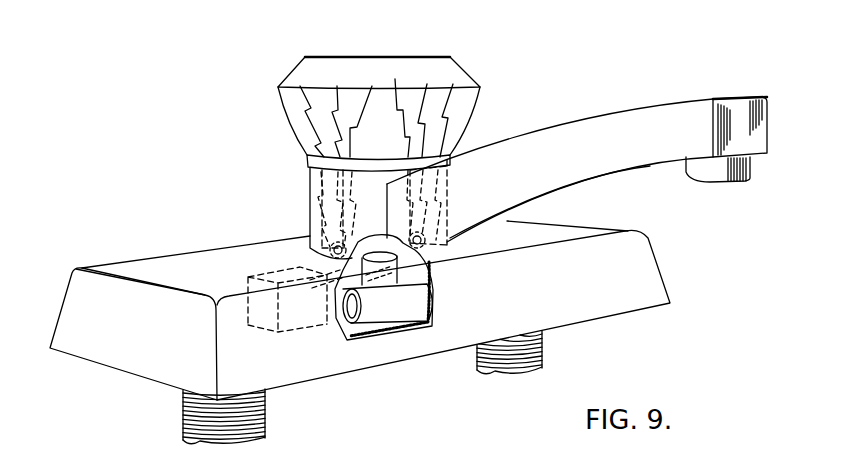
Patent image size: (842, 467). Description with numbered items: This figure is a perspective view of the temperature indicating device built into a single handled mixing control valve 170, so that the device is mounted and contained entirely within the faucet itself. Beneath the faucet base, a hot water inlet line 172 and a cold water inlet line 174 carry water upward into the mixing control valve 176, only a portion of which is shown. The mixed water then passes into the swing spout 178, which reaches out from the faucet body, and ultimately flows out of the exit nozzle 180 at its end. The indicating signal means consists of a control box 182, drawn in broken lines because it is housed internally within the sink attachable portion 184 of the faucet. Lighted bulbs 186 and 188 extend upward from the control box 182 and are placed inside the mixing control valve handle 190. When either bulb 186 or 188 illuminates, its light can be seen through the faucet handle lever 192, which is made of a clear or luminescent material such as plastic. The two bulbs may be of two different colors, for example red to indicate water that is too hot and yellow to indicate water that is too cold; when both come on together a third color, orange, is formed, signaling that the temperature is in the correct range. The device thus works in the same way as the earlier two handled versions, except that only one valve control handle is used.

The single handled mixing control valve 170 is at (118, 378).
The hot water inlet line 172 is at (267, 427).
The cold water inlet line 174 is at (543, 353).
The mixing control valve 176 is at (430, 287).
The swing spout 178 is at (640, 115).
The exit nozzle 180 is at (713, 175).
The control box 182 is at (297, 321).
The sink attachable portion 184 is at (70, 290).
The lighted bulb 186 is at (313, 223).
The lighted bulb 188 is at (447, 197).
The mixing control valve handle 190 is at (310, 183).
The faucet handle lever 192 is at (358, 56).